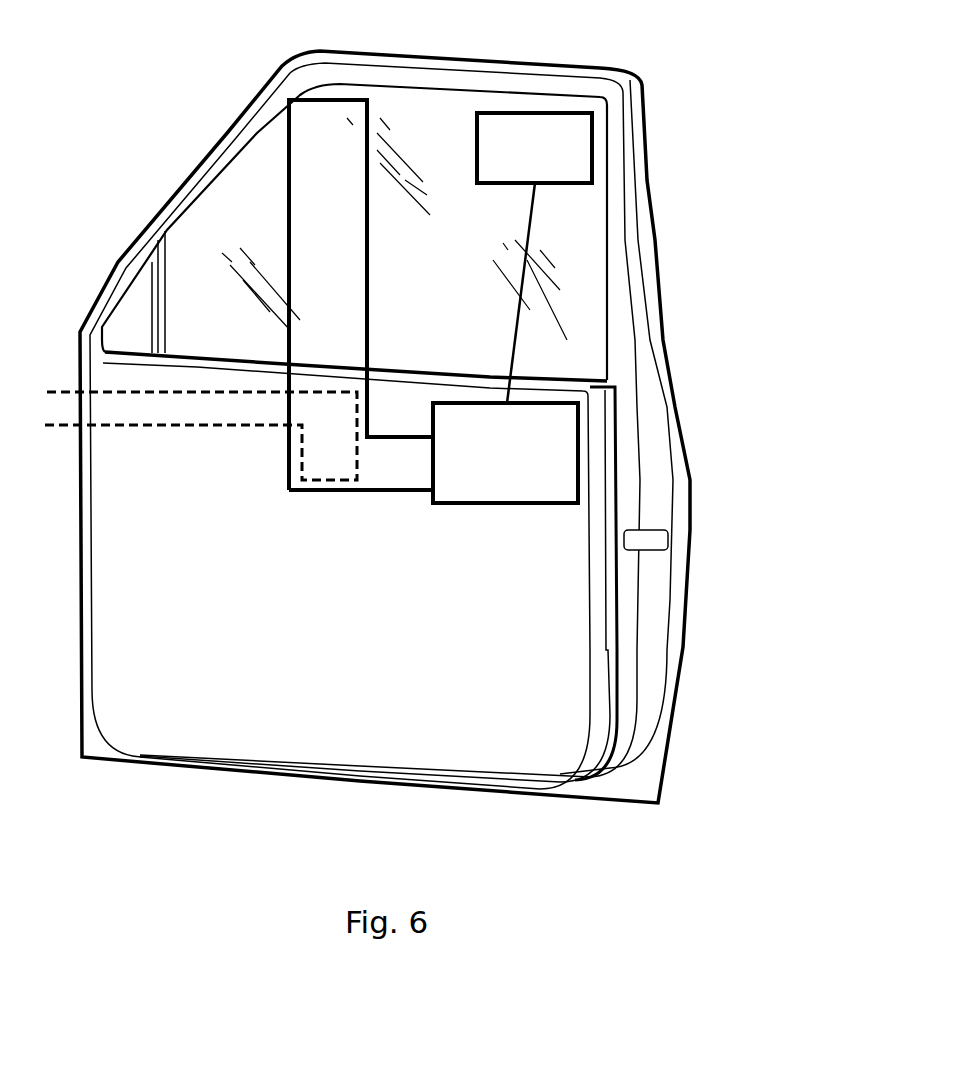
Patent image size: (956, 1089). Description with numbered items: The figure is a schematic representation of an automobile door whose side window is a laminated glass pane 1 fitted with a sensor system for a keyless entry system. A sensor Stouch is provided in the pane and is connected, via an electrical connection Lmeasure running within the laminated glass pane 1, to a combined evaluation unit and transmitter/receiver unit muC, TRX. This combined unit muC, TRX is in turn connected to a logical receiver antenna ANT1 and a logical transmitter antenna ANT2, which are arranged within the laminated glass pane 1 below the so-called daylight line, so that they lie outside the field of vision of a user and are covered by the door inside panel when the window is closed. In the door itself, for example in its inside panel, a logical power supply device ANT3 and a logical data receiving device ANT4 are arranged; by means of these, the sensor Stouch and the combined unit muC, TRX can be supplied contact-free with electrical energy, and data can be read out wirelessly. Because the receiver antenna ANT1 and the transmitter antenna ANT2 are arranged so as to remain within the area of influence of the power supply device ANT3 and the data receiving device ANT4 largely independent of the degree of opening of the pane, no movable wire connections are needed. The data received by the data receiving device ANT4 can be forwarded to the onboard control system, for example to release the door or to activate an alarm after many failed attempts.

The laminated glass pane 1 is at (587, 102).
The receiver antenna ANT1 is at (241, 273).
The transmitter antenna ANT2 is at (291, 222).
The power supply device ANT3 is at (201, 481).
The data receiving device ANT4 is at (304, 460).
The sensor Stouch is at (534, 258).
The electrical connection Lmeasure is at (514, 327).
The evaluation unit muC is at (505, 453).
The transmitter/receiver unit TRX is at (506, 475).